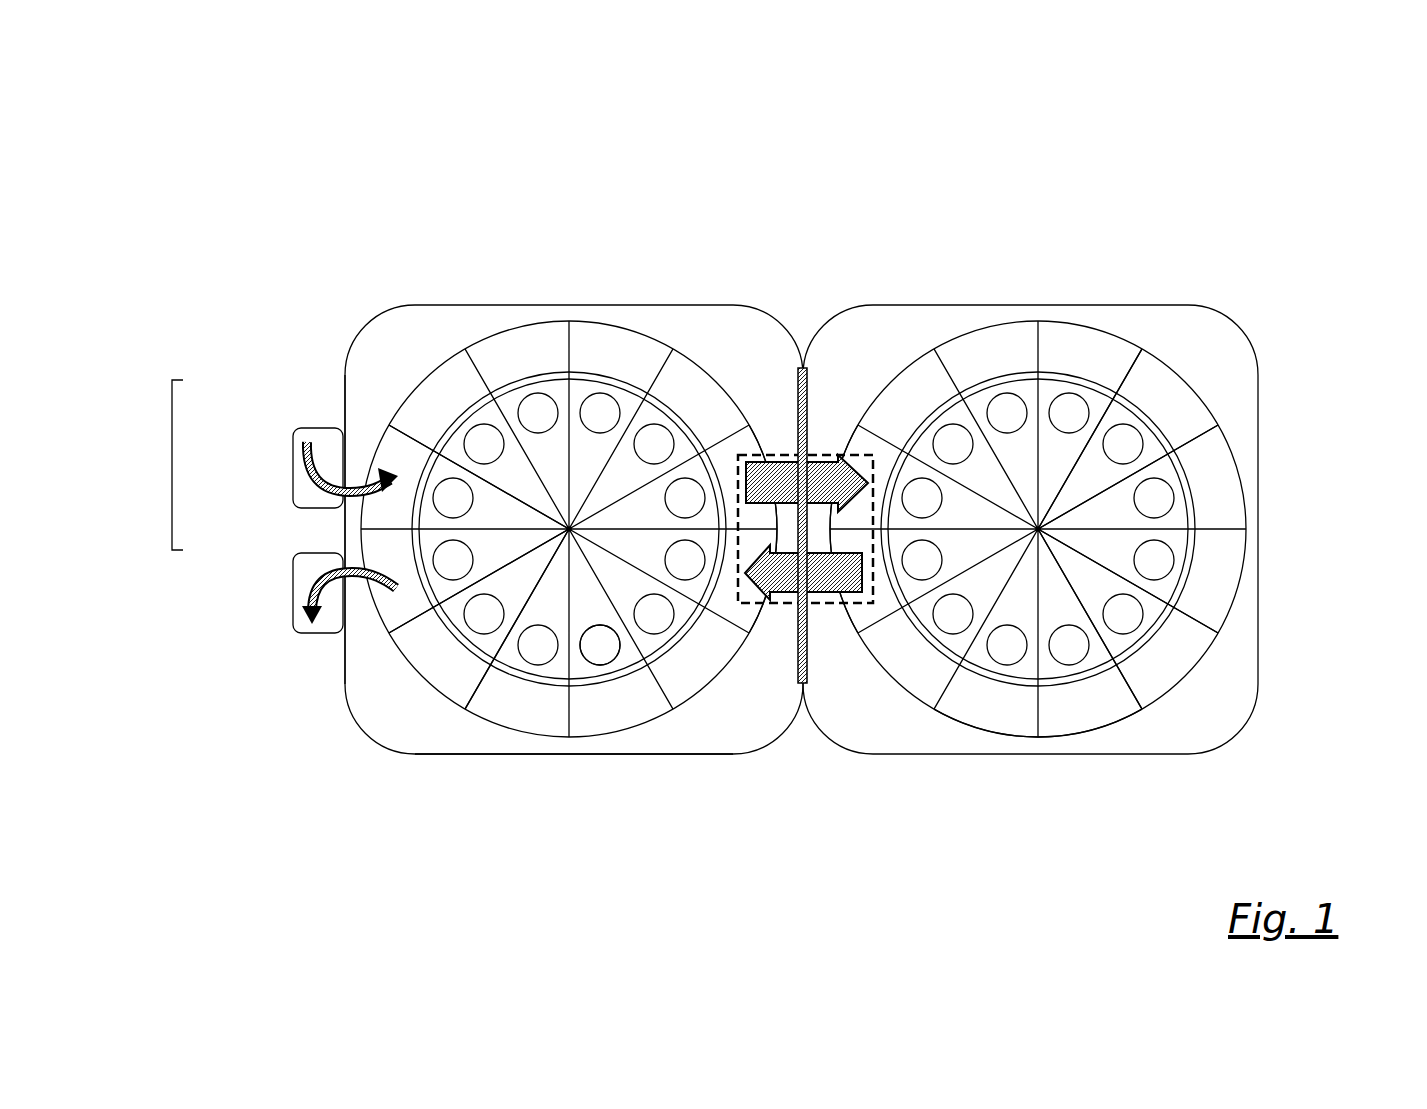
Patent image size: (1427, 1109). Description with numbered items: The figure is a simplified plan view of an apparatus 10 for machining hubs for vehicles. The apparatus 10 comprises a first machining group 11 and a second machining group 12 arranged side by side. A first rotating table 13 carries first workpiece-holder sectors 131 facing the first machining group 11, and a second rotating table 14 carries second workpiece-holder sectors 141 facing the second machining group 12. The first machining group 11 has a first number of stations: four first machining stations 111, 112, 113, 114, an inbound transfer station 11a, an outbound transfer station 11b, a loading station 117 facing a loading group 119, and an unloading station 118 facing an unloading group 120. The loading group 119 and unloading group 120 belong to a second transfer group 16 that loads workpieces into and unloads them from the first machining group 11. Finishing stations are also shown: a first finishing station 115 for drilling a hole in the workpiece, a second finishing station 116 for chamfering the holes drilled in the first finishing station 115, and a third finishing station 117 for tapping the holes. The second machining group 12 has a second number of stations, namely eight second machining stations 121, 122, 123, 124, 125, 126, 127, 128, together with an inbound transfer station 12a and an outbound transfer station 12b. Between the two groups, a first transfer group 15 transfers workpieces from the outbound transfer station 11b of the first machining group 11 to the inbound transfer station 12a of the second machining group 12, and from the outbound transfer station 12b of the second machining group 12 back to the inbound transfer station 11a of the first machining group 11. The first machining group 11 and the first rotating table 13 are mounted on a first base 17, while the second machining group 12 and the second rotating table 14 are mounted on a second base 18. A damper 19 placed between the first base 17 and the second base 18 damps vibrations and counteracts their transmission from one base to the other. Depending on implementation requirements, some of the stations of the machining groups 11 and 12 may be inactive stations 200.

The apparatus for machining hubs for vehicles 10 is at (1257, 236).
The first machining group 11 is at (547, 742).
The inbound transfer station 11a is at (747, 610).
The outbound transfer station 11b is at (747, 450).
The second machining group 12 is at (1249, 507).
The inbound transfer station 12a is at (855, 447).
The outbound transfer station 12b is at (832, 615).
The first rotating table 13 is at (465, 647).
The second rotating table 14 is at (1079, 375).
The first transfer group 15 is at (776, 450).
The second transfer group 16 is at (172, 468).
The first base 17 is at (412, 760).
The second base 18 is at (1261, 673).
The damper 19 is at (803, 357).
The first machining station 111 is at (455, 370).
The first machining station 112 is at (552, 337).
The first machining station 113 is at (585, 350).
The first machining station 114 is at (685, 372).
The first finishing station 115 is at (598, 666).
The second finishing station 116 is at (482, 707).
The loading station 117 is at (405, 455).
The unloading station 118 is at (345, 660).
The loading group 119 is at (291, 446).
The unloading group 120 is at (291, 561).
The second machining station 121 is at (1015, 347).
The second machining station 122 is at (1055, 347).
The second machining station 123 is at (1188, 415).
The second machining station 124 is at (1213, 453).
The second machining station 125 is at (1212, 602).
The second machining station 126 is at (1145, 683).
The second machining station 127 is at (1058, 722).
The second machining station 128 is at (1028, 722).
The first workpiece-holder sectors 131 is at (481, 411).
The second workpiece-holder sectors 141 is at (950, 410).
The inactive stations 200 is at (912, 375).